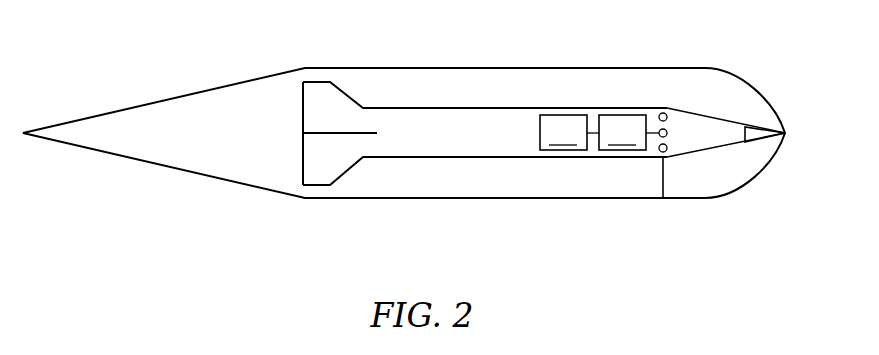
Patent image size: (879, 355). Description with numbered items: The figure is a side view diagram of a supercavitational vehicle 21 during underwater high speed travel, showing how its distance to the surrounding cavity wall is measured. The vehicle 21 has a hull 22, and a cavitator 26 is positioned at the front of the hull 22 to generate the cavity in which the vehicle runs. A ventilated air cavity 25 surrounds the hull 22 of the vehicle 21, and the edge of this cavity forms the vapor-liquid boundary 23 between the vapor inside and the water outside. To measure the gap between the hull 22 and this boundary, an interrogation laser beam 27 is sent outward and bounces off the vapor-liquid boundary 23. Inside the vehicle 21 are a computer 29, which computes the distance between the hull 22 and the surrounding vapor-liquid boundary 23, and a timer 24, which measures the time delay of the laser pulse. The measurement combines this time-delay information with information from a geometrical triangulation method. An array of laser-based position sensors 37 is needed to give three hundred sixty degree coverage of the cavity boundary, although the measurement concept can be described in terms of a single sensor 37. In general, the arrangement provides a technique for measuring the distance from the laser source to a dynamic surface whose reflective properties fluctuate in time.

The supercavitational vehicle 21 is at (432, 104).
The hull 22 is at (398, 158).
The vapor-liquid boundary 23 is at (477, 200).
The timer 24 is at (629, 132).
The ventilated air cavity 25 is at (548, 73).
The cavitator 26 is at (766, 128).
The interrogation laser beam 27 is at (663, 178).
The computer 29 is at (569, 132).
The laser-based position sensor 37 is at (663, 112).